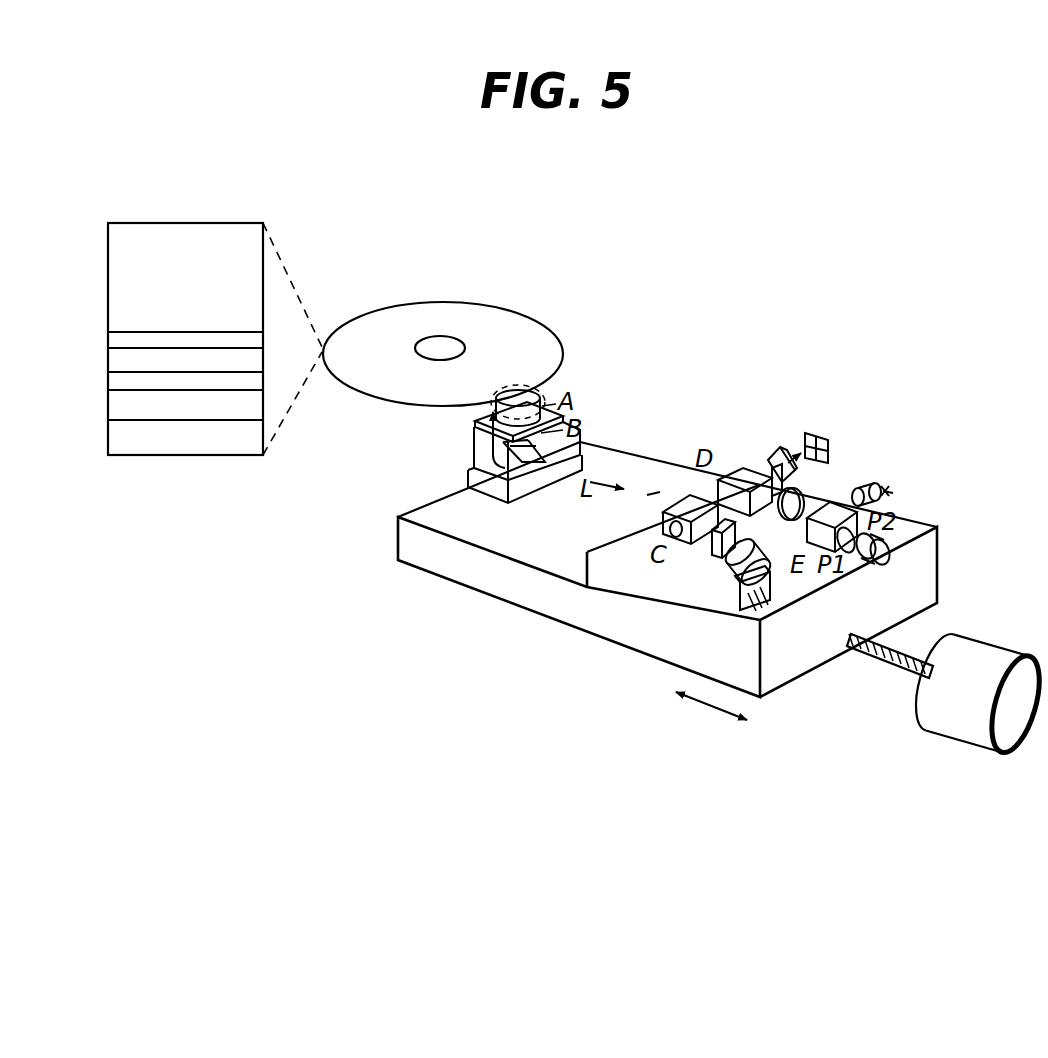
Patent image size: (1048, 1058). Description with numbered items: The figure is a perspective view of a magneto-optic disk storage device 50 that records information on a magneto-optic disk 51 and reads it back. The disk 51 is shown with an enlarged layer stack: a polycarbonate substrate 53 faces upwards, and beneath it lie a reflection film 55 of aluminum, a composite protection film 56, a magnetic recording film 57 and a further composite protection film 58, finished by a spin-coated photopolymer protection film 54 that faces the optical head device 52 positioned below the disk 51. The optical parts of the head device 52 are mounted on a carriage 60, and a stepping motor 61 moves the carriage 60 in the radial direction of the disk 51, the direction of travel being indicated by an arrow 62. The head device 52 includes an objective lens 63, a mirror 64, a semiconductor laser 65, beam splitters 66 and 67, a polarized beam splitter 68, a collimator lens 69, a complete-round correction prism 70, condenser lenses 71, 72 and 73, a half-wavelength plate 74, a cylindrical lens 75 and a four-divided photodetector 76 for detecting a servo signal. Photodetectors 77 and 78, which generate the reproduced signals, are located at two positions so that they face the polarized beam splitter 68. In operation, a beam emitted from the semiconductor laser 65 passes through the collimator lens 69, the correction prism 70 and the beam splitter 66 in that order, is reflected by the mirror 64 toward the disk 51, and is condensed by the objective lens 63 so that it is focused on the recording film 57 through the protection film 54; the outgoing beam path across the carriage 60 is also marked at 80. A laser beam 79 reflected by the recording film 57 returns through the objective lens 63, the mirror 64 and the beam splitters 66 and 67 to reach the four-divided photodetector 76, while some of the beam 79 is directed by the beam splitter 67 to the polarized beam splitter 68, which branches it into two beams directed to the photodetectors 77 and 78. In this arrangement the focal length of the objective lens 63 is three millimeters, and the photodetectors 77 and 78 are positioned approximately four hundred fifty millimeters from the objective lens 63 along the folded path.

The magneto-optic disk storage device 50 is at (823, 280).
The magneto-optic disk 51 is at (507, 302).
The optical head device 52 is at (445, 583).
The substrate 53 is at (109, 290).
The protection film 54 is at (115, 445).
The reflection film 55 is at (112, 341).
The composite protection film 56 is at (112, 361).
The recording film 57 is at (112, 382).
The composite protection film 58 is at (115, 412).
The carriage 60 is at (503, 593).
The stepping motor 61 is at (940, 728).
The direction of movement 62 is at (703, 701).
The objective lens 63 is at (522, 398).
The mirror 64 is at (496, 460).
The semiconductor laser 65 is at (782, 593).
The beam splitter 66 is at (665, 498).
The beam splitter 67 is at (730, 470).
The polarized beam splitter 68 is at (850, 487).
The collimator lens 69 is at (737, 570).
The complete-round correction prism 70 is at (727, 558).
The condenser lens 71 is at (772, 470).
The condenser lens 72 is at (866, 530).
The condenser lens 73 is at (879, 483).
The 1/2 wavelength plate 74 is at (805, 500).
The cylindrical lens 75 is at (778, 446).
The four-divided photodetector 76 is at (808, 432).
The photodetector 77 is at (874, 552).
The photodetector 78 is at (888, 497).
The laser beam 79 is at (606, 466).
The light beam 80 is at (647, 495).